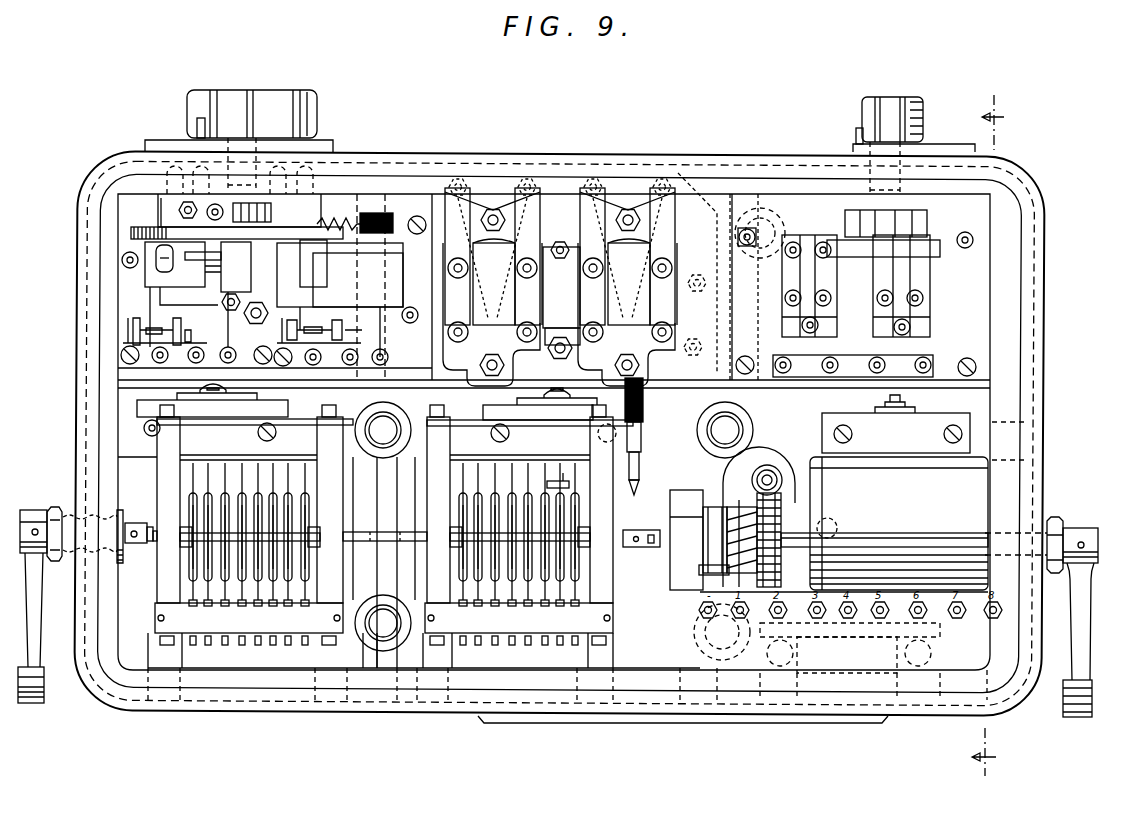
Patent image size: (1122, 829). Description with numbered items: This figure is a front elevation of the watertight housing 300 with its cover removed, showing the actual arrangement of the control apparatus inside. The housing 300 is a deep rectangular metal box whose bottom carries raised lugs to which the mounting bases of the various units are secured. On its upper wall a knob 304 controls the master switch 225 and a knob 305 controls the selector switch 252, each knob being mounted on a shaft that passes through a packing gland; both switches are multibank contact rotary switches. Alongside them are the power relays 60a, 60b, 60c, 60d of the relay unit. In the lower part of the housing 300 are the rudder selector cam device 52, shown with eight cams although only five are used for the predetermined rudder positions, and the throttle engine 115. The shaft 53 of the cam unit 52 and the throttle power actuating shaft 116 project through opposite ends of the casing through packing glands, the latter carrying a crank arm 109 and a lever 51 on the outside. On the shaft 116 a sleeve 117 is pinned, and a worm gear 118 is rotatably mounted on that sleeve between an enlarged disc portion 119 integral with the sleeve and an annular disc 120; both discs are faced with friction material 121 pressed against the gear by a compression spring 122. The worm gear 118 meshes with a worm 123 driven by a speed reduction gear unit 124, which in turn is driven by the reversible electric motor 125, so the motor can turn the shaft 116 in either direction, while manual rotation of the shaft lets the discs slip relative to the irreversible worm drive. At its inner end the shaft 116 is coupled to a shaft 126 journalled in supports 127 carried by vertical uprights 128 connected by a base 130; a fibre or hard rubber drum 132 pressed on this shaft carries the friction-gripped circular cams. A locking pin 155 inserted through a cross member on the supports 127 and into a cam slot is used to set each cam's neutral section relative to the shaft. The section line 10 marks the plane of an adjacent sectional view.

The housing 300 is at (611, 149).
The knob 304 is at (285, 98).
The knob 305 is at (928, 92).
The section line 10 is at (988, 437).
The master switch 225 is at (267, 232).
The relay 60a is at (351, 285).
The relay 60b is at (200, 297).
The relay 60c is at (492, 282).
The relay 60d is at (627, 282).
The selector switch 252 is at (933, 264).
The rudder selector cam device 52 is at (157, 573).
The lever 51 is at (44, 699).
The shaft 53 is at (360, 538).
The supports 127 is at (600, 590).
The vertical uprights 128 is at (602, 633).
The base 130 is at (618, 657).
The drum 132 is at (565, 478).
The locking pin 155 is at (638, 469).
The throttle engine 115 is at (658, 554).
The shaft 126 is at (618, 538).
The compression spring 122 is at (730, 513).
The enlarged disc portion 119 is at (722, 568).
The friction material 121 is at (783, 540).
The sleeve 117 is at (800, 528).
The worm gear 118 is at (742, 535).
The speed reduction gear unit 124 is at (747, 466).
The worm 123 is at (775, 481).
The shaft 116 is at (882, 543).
The reversible electric motor 125 is at (899, 492).
The annular disc 120 is at (899, 569).
The crank arm 109 is at (1064, 704).